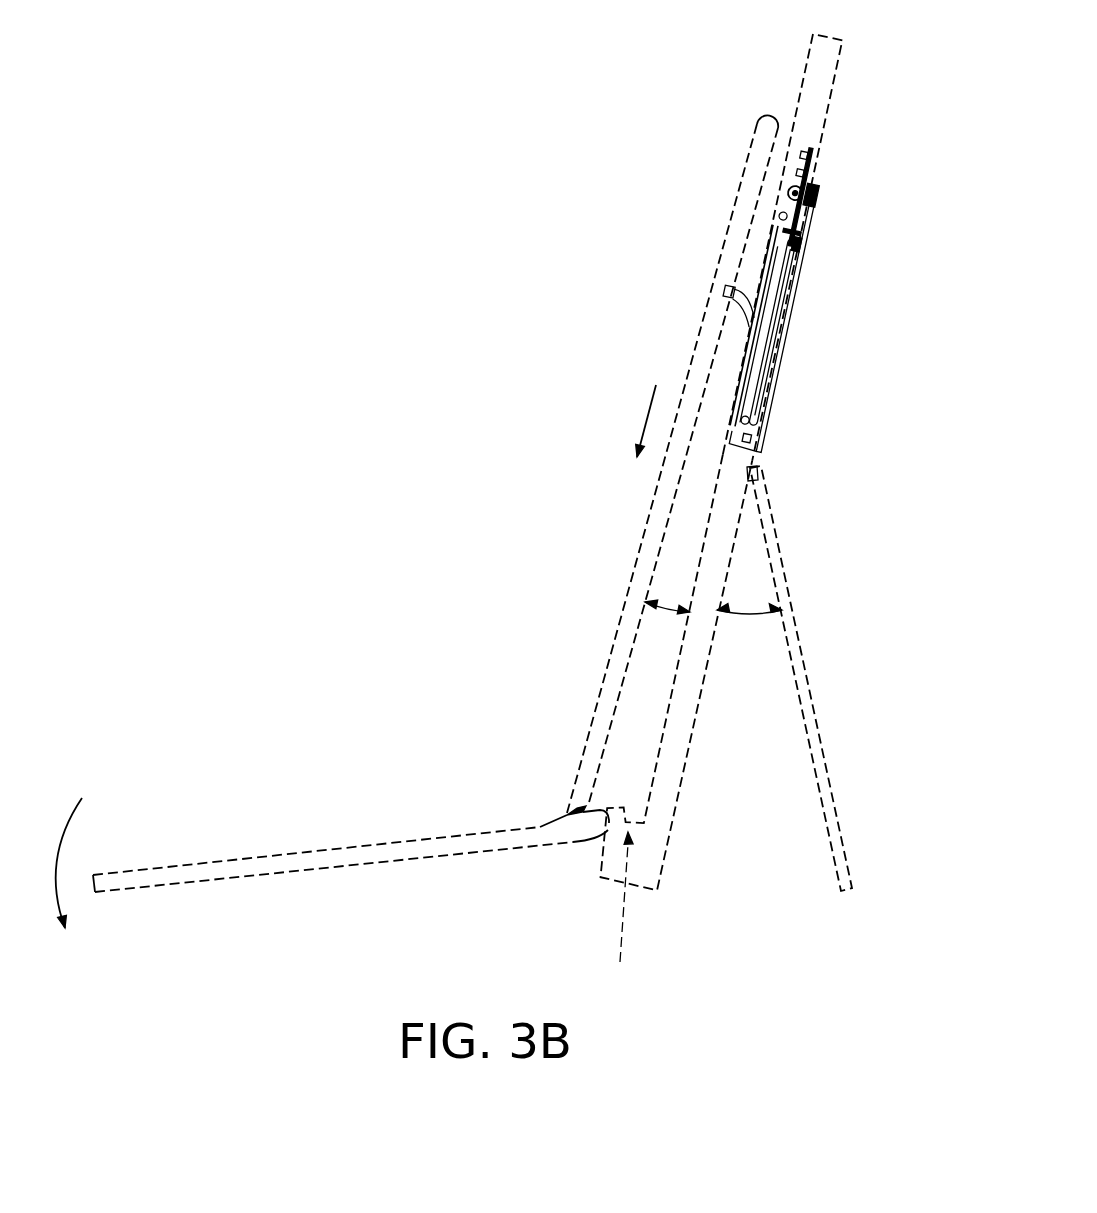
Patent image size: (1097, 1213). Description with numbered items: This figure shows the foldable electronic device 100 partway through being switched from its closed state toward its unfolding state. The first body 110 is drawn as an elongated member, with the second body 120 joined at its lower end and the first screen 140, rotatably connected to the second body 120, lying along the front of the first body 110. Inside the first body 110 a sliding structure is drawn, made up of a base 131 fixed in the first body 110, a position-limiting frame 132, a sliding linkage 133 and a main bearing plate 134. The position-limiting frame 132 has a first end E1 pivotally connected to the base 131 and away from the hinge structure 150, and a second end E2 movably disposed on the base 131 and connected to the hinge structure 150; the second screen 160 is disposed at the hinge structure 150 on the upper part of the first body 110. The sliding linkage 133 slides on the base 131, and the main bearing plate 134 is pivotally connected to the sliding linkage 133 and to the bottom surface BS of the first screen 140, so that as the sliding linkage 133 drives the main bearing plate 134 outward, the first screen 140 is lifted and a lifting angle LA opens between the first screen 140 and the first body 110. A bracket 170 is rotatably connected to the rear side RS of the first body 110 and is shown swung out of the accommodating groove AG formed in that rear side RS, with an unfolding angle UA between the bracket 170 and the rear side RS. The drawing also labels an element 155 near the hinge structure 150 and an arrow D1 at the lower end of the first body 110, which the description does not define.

The foldable electronic device 100 is at (945, 1000).
The first body 110 is at (665, 778).
The second body 120 is at (358, 856).
The base 131 is at (743, 430).
The position-limiting frame 132 is at (750, 404).
The sliding linkage 133 is at (761, 307).
The main bearing plate 134 is at (723, 290).
The first screen 140 is at (658, 498).
The hinge structure 150 is at (812, 165).
The pivot block 155 is at (808, 213).
The second screen 160 is at (825, 78).
The bracket 170 is at (813, 705).
The first end E1 is at (736, 421).
The second end E2 is at (781, 205).
The rear side RS is at (777, 374).
The bottom surface BS is at (665, 527).
The lifting angle LA is at (662, 607).
The unfolding angle UA is at (748, 612).
The accommodating groove AG is at (687, 742).
The first direction D1 is at (625, 915).